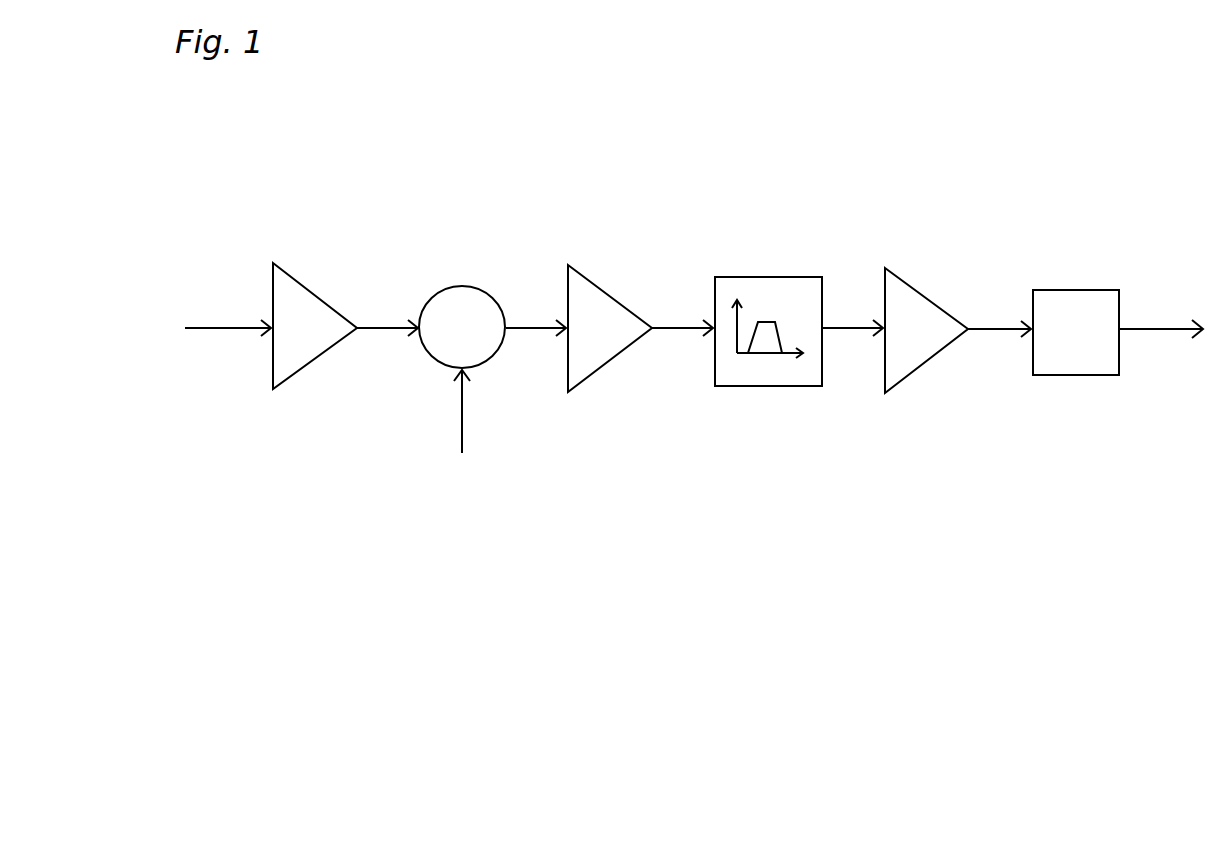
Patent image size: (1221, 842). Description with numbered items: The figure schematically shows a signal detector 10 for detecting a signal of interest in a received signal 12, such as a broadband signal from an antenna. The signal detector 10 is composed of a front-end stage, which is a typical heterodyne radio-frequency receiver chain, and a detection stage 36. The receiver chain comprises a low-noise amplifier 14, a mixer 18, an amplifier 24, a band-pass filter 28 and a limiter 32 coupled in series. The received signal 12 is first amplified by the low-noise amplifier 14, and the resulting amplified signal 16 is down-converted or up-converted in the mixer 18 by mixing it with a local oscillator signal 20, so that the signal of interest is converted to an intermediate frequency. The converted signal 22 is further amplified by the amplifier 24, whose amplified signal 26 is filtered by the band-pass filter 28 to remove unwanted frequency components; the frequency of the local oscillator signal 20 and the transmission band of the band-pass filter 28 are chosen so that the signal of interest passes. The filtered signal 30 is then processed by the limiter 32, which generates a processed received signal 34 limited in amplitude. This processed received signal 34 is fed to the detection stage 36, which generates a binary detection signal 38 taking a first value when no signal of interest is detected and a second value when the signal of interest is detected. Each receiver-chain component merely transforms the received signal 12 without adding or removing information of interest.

The signal detector 10 is at (364, 143).
The received signal 12 is at (207, 331).
The low-noise amplifier 14 is at (300, 278).
The amplified signal 16 is at (370, 331).
The mixer 18 is at (448, 286).
The local oscillator signal 20 is at (459, 409).
The up-converted or down-converted signal 22 is at (523, 331).
The amplifier 24 is at (590, 278).
The amplified signal 26 is at (668, 331).
The band-pass filter 28 is at (745, 277).
The filtered signal 30 is at (848, 331).
The limiter 32 is at (907, 281).
The processed received signal 34 is at (988, 332).
The detection stage 36 is at (1055, 290).
The detection signal 38 is at (1157, 336).